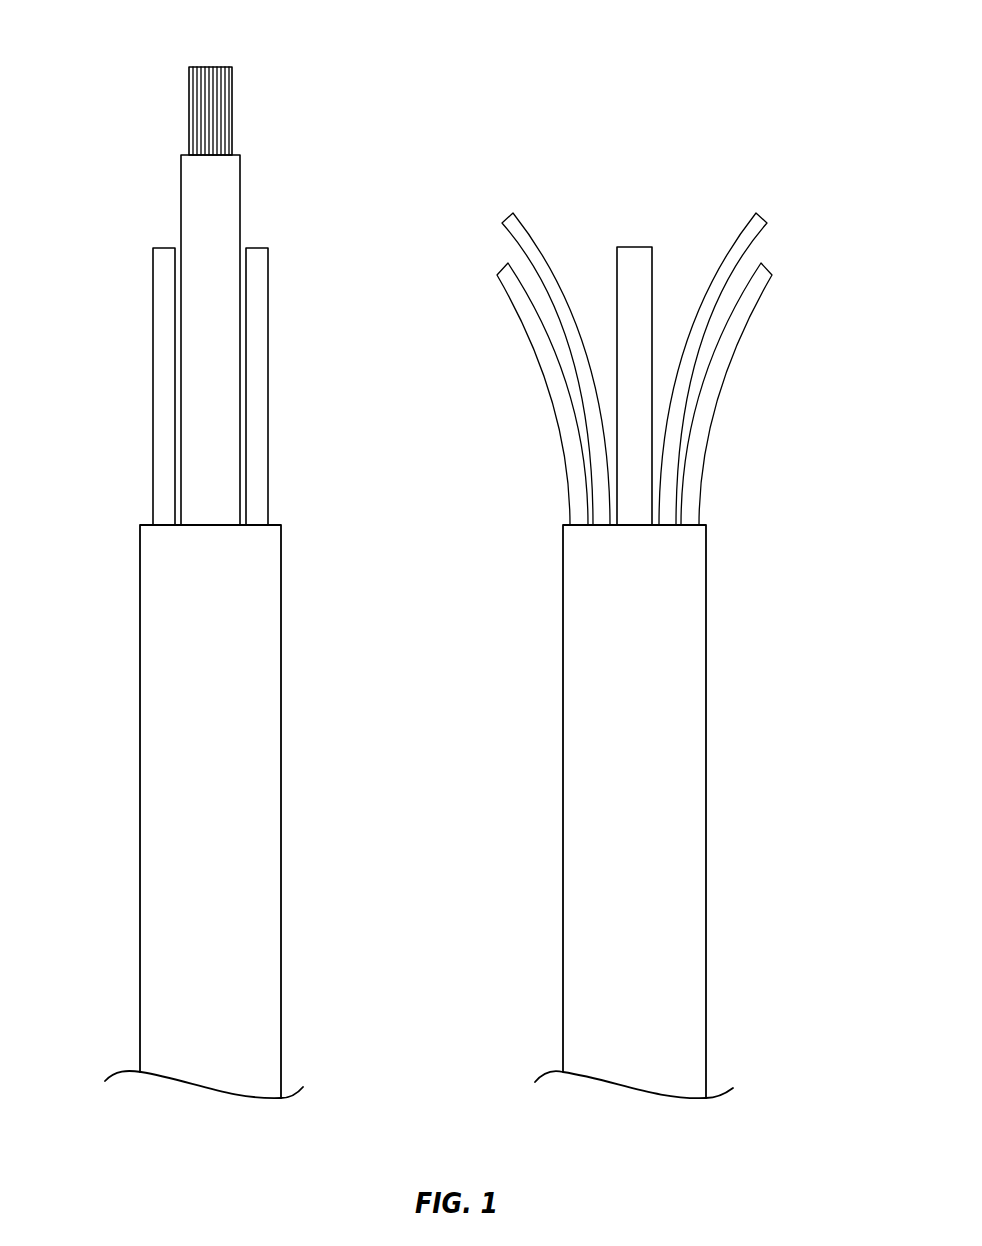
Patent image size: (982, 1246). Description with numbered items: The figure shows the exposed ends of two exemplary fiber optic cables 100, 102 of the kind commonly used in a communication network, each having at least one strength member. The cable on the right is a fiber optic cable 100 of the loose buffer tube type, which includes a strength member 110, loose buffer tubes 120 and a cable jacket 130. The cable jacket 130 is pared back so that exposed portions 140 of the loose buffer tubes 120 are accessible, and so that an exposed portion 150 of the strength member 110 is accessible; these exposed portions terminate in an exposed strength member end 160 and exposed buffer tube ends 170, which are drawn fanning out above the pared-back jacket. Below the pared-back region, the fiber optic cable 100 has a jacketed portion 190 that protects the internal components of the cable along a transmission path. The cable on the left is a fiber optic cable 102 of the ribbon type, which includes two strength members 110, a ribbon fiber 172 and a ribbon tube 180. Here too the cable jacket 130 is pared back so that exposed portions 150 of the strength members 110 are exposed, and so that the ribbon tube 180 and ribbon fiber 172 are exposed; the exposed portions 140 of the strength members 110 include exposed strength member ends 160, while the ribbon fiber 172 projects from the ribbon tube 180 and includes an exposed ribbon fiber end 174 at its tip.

The fiber optic cable 100 is at (730, 607).
The fiber optic cable 102 is at (446, 811).
The strength member 110 is at (162, 423).
The loose buffer tubes 120 is at (738, 378).
The cable jacket 130 is at (230, 769).
The exposed portions of the loose buffer tubes 140 is at (757, 303).
The exposed portion of the strength member 150 is at (162, 378).
The exposed strength member end 160 is at (263, 238).
The exposed buffer tube ends 170 is at (495, 212).
The ribbon fiber 172 is at (212, 120).
The exposed ribbon fiber end 174 is at (246, 86).
The ribbon tube 180 is at (210, 319).
The jacketed portion 190 is at (230, 897).